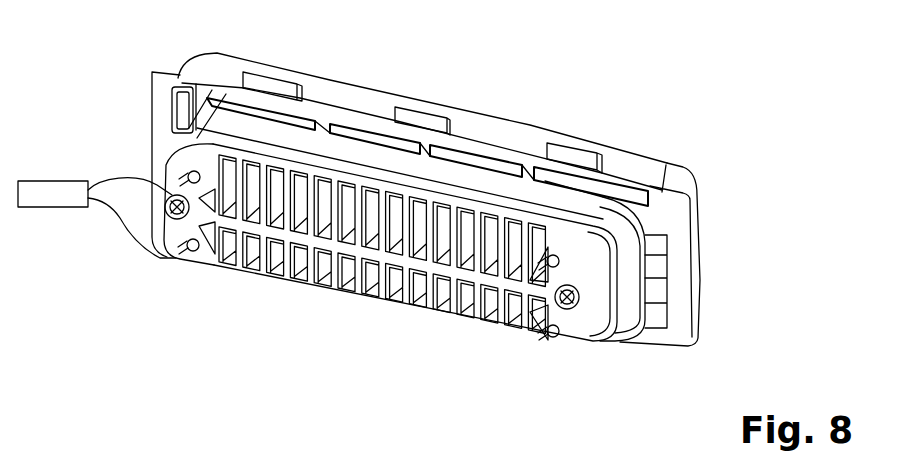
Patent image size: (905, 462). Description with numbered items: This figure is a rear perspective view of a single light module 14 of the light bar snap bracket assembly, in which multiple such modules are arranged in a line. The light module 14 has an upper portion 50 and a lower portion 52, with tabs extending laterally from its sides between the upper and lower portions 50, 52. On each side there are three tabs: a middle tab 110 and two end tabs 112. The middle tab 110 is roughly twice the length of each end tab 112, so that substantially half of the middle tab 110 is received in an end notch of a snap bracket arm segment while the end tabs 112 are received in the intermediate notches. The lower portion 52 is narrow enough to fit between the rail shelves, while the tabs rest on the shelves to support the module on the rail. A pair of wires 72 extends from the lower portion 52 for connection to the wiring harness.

The light module 14 is at (646, 47).
The upper portion 50 is at (664, 160).
The lower portion 52 is at (593, 340).
The wires 72 is at (128, 236).
The middle tab 110 is at (428, 122).
The end tabs 112 is at (265, 75).